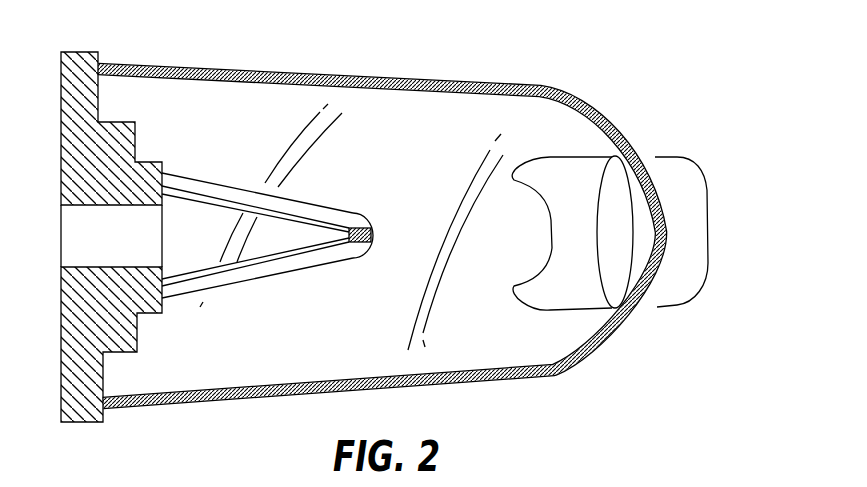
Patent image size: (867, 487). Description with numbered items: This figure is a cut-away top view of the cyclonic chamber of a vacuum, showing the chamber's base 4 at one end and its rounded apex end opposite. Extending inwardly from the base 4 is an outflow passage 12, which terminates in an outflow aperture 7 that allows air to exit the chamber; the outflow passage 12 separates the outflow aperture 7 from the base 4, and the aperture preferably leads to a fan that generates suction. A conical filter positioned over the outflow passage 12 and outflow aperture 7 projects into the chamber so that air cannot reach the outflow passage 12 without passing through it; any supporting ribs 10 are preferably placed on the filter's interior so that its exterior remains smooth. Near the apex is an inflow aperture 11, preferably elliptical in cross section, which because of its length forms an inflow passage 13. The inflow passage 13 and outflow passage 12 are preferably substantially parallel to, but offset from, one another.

The base 4 is at (98, 88).
The outflow aperture 7 is at (163, 235).
The supporting ribs 10 is at (310, 197).
The inflow aperture 11 is at (615, 217).
The outflow passage 12 is at (133, 253).
The inflow passage 13 is at (708, 253).